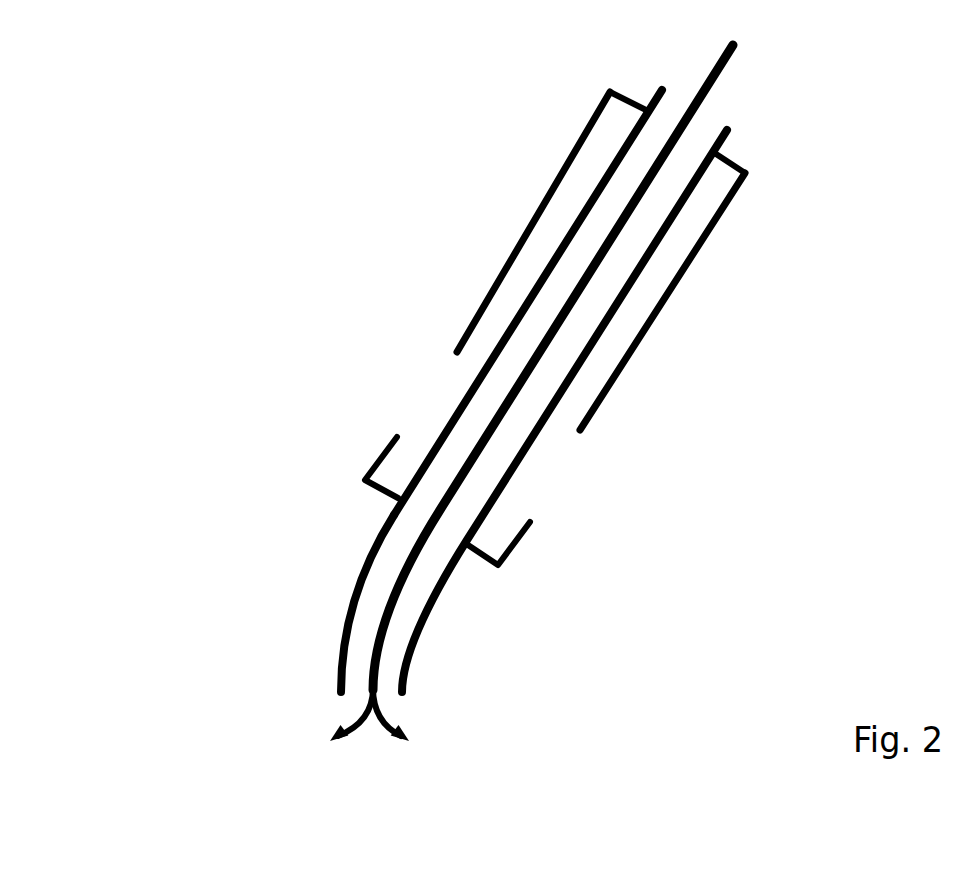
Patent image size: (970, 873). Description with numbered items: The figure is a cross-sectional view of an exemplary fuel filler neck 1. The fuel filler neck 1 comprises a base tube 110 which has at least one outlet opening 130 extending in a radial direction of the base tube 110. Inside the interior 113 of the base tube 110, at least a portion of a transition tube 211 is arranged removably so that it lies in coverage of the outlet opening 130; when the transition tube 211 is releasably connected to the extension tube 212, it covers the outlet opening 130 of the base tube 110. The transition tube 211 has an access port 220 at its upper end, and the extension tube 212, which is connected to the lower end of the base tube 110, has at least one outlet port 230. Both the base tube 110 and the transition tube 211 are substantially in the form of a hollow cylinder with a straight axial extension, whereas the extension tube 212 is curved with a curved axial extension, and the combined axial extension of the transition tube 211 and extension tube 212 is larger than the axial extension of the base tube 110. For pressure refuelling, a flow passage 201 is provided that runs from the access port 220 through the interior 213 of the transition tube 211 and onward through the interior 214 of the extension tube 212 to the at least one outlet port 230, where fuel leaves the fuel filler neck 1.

The fuel filler neck 1 is at (262, 165).
The flow passage 201 is at (732, 60).
The access port 220 is at (735, 94).
The transition tube 211 is at (457, 420).
The extension tube 212 is at (340, 642).
The interior of the transition tube 213 is at (488, 405).
The interior of the extension tube 214 is at (373, 605).
The base tube 110 is at (660, 312).
The interior of the base tube 113 is at (693, 213).
The outlet opening 130 is at (562, 486).
The outlet port 230 is at (322, 712).